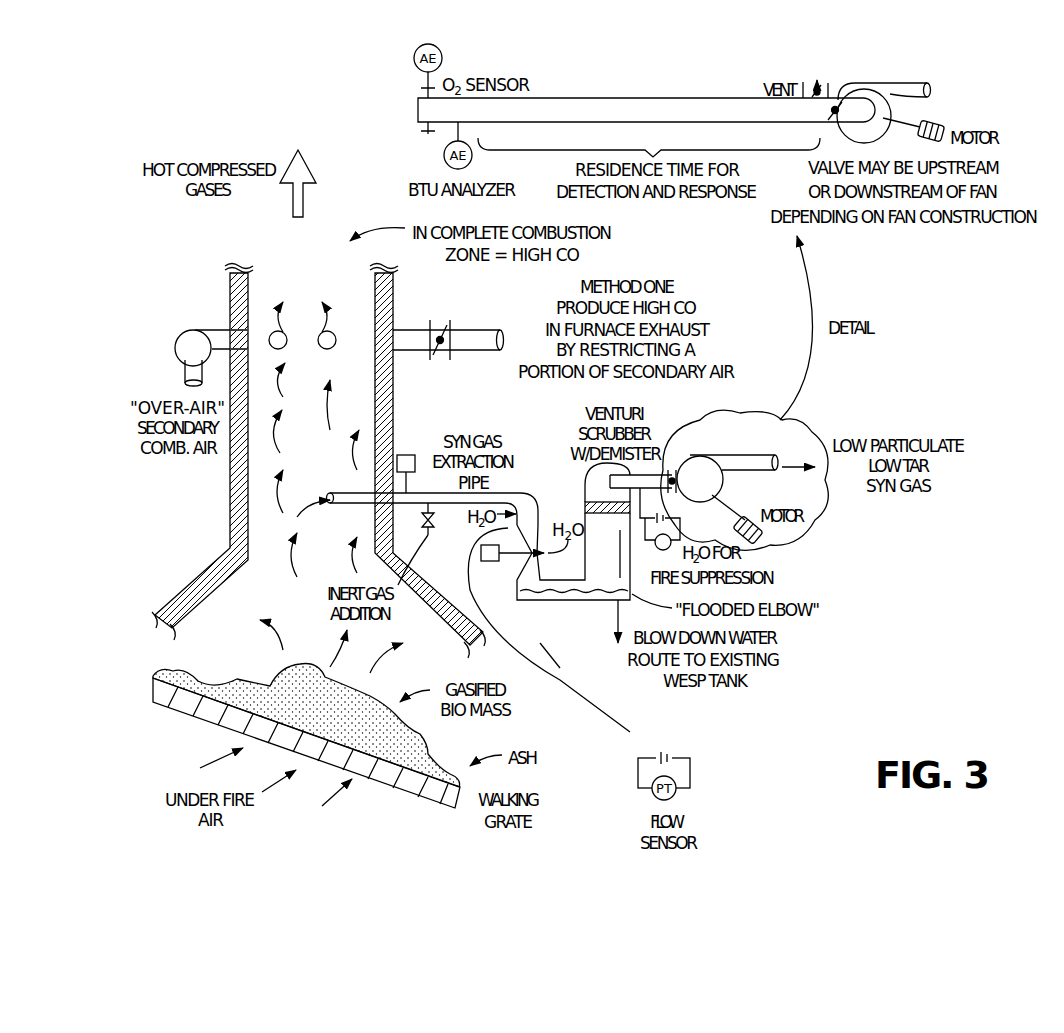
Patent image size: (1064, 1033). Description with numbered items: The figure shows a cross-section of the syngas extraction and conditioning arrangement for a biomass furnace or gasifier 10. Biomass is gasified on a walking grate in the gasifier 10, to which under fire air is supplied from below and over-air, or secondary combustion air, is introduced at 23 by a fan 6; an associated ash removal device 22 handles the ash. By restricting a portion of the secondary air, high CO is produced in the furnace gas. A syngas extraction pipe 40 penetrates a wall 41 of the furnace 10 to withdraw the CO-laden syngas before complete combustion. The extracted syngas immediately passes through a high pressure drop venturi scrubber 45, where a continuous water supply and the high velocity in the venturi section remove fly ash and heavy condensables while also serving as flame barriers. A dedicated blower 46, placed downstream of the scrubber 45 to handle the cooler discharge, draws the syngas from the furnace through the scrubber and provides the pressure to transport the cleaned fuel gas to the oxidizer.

The fan 6 is at (191, 333).
The furnace or gasifier 10 is at (220, 512).
The ash removal device 22 is at (390, 786).
The secondary combustion air introduction 23 is at (246, 344).
The syngas extraction pipe 40 is at (354, 507).
The wall 41 is at (395, 405).
The venturi scrubber 45 is at (555, 508).
The blower 46 is at (908, 90).